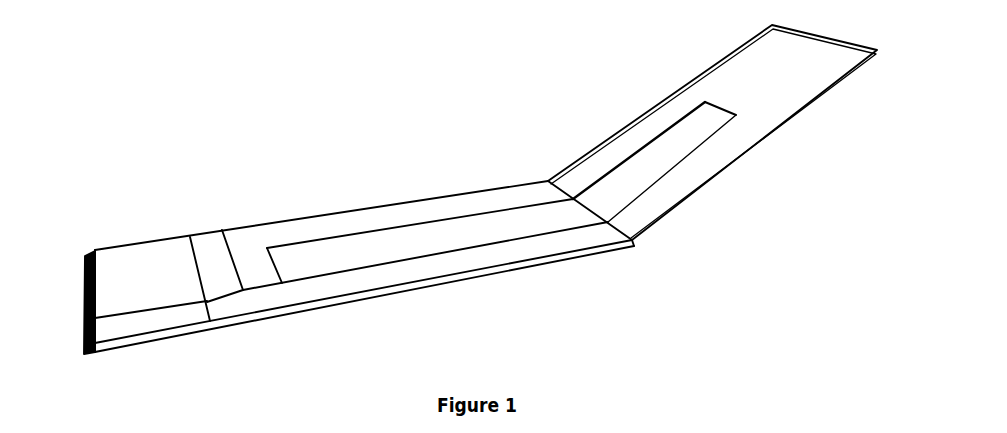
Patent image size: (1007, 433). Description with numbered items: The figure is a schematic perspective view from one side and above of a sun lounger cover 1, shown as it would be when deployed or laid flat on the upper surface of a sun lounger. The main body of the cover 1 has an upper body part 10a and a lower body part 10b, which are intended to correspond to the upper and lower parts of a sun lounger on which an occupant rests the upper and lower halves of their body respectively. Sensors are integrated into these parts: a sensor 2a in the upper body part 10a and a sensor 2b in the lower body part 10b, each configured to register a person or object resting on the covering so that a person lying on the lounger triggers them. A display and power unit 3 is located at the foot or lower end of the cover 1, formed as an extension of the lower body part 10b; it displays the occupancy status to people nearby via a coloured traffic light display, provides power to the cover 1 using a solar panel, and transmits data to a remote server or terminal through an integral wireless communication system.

The sun lounger cover 1 is at (462, 189).
The sensor 2a is at (655, 165).
The sensor 2b is at (432, 237).
The display and power unit 3 is at (105, 227).
The upper body part 10a is at (735, 83).
The lower body part 10b is at (398, 215).